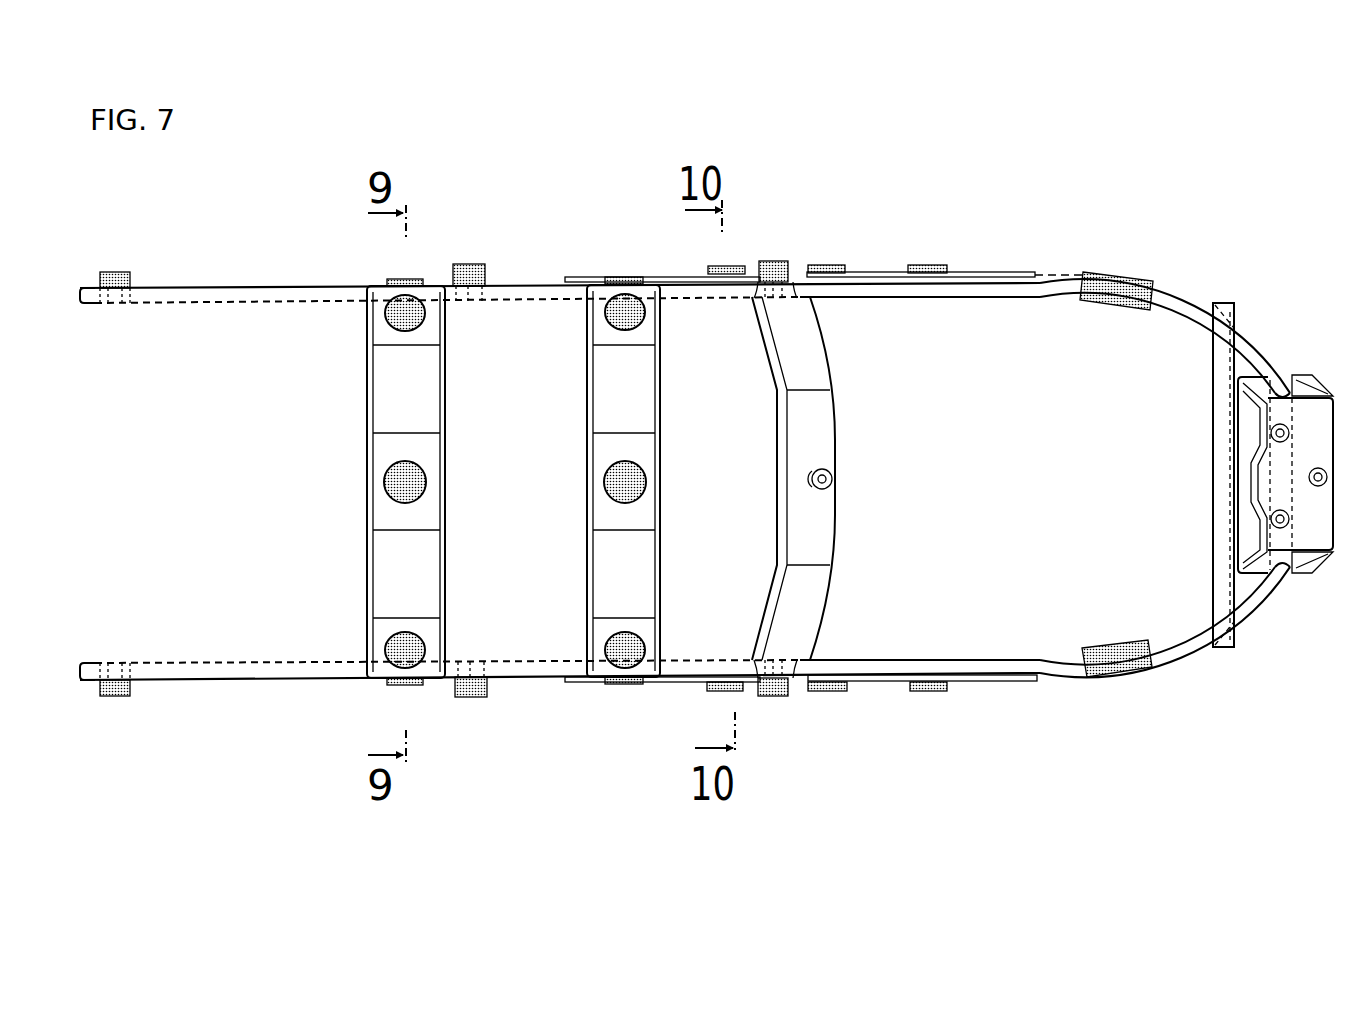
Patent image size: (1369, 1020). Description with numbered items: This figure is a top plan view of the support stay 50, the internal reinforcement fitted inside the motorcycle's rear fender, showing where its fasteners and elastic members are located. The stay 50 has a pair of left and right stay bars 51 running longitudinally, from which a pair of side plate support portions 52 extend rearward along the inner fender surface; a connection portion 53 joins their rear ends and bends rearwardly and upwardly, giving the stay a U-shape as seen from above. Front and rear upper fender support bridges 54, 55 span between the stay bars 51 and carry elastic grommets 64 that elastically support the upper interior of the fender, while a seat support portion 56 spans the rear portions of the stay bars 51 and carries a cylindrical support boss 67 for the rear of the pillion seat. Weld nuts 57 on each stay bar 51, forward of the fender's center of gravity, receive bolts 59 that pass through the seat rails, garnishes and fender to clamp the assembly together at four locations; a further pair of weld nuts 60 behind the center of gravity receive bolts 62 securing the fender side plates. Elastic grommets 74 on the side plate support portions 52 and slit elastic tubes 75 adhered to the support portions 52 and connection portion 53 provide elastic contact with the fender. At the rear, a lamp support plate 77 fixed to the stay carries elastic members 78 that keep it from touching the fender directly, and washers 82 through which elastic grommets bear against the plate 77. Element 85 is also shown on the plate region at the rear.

The support stay 50 is at (560, 518).
The stay bar 51 is at (508, 285).
The side plate support portion 52 is at (975, 272).
The connection portion 53 is at (1258, 340).
The front upper fender support bridge 54 is at (383, 385).
The rear upper fender support bridge 55 is at (587, 447).
The seat support portion 56 is at (822, 430).
The weld nut 57 is at (140, 303).
The bolt 59 is at (120, 272).
The weld nut 60 is at (815, 660).
The bolt 62 is at (788, 262).
The grommet 64 is at (405, 300).
The support boss 67 is at (814, 486).
The grommet 74 is at (730, 266).
The elastic tube 75 is at (1097, 272).
The lamp support plate 77 is at (1296, 478).
The elastic member 78 is at (1300, 373).
The washer 82 is at (1290, 521).
The plate 85 is at (1218, 505).